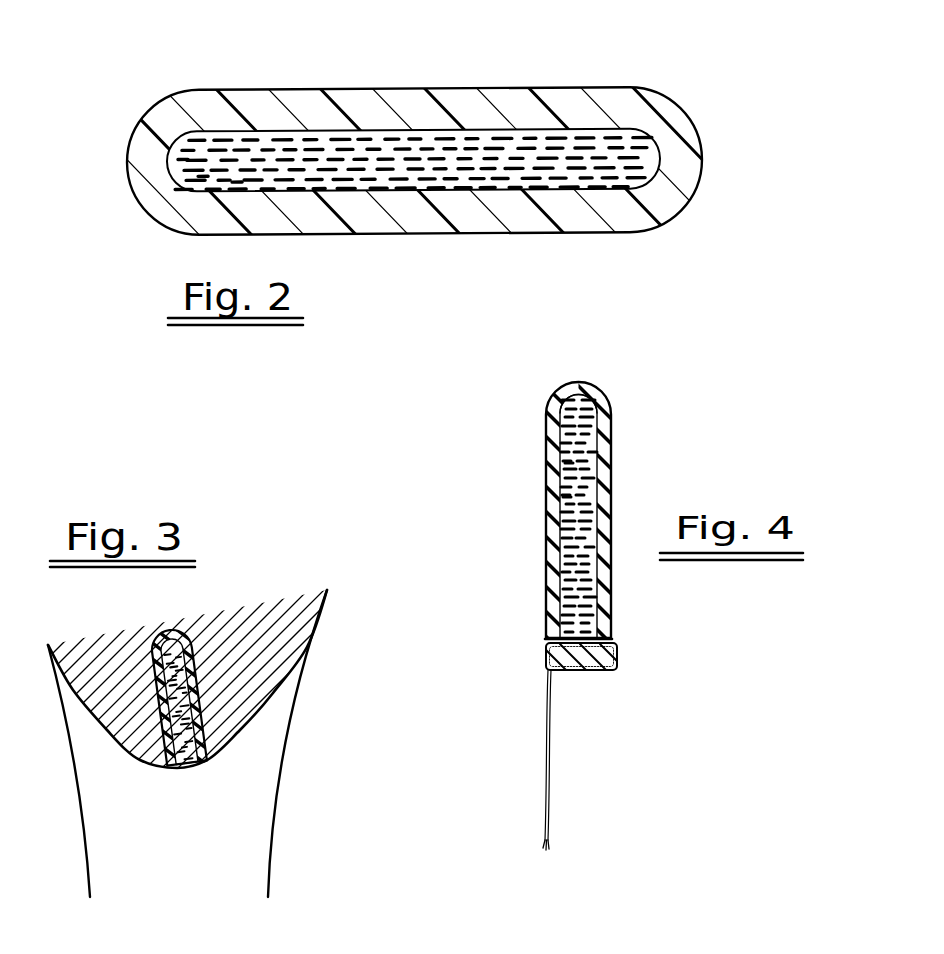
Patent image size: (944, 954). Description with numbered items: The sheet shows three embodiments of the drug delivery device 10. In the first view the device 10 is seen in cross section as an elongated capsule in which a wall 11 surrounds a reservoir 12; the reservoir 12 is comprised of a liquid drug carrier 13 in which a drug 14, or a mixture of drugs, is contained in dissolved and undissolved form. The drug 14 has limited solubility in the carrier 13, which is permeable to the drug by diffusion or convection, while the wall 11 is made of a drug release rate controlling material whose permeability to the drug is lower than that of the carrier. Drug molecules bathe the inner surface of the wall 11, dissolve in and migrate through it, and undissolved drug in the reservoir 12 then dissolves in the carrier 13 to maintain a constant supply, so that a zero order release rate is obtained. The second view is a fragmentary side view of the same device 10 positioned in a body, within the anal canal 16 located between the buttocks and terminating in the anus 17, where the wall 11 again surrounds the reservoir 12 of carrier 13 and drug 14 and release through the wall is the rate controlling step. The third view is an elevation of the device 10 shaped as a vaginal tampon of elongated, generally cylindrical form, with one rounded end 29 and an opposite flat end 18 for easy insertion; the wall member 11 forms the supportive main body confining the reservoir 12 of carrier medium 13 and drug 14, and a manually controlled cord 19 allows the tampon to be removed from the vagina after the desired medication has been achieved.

In FIG. 2, the drug delivery device 10 is at (609, 86).
In FIG. 3, the drug delivery device 10 is at (170, 627).
In FIG. 4, the drug delivery device 10 is at (611, 473).
In FIG. 2, the wall 11 is at (636, 218).
In FIG. 3, the wall 11 is at (201, 715).
In FIG. 4, the wall 11 is at (616, 613).
In FIG. 2, the reservoir 12 is at (521, 182).
In FIG. 3, the reservoir 12 is at (247, 603).
In FIG. 4, the reservoir 12 is at (572, 556).
In FIG. 2, the drug carrier 13 is at (409, 178).
In FIG. 3, the drug carrier 13 is at (178, 708).
In FIG. 4, the drug carrier 13 is at (582, 517).
In FIG. 2, the drug 14 is at (237, 181).
In FIG. 3, the drug 14 is at (195, 724).
In FIG. 4, the drug 14 is at (563, 497).
In FIG. 3, the anal canal 16 is at (155, 622).
In FIG. 3, the anus 17 is at (200, 764).
In FIG. 4, the flat end 18 is at (588, 671).
In FIG. 4, the cord 19 is at (543, 747).
In FIG. 4, the rounded end 29 is at (580, 381).